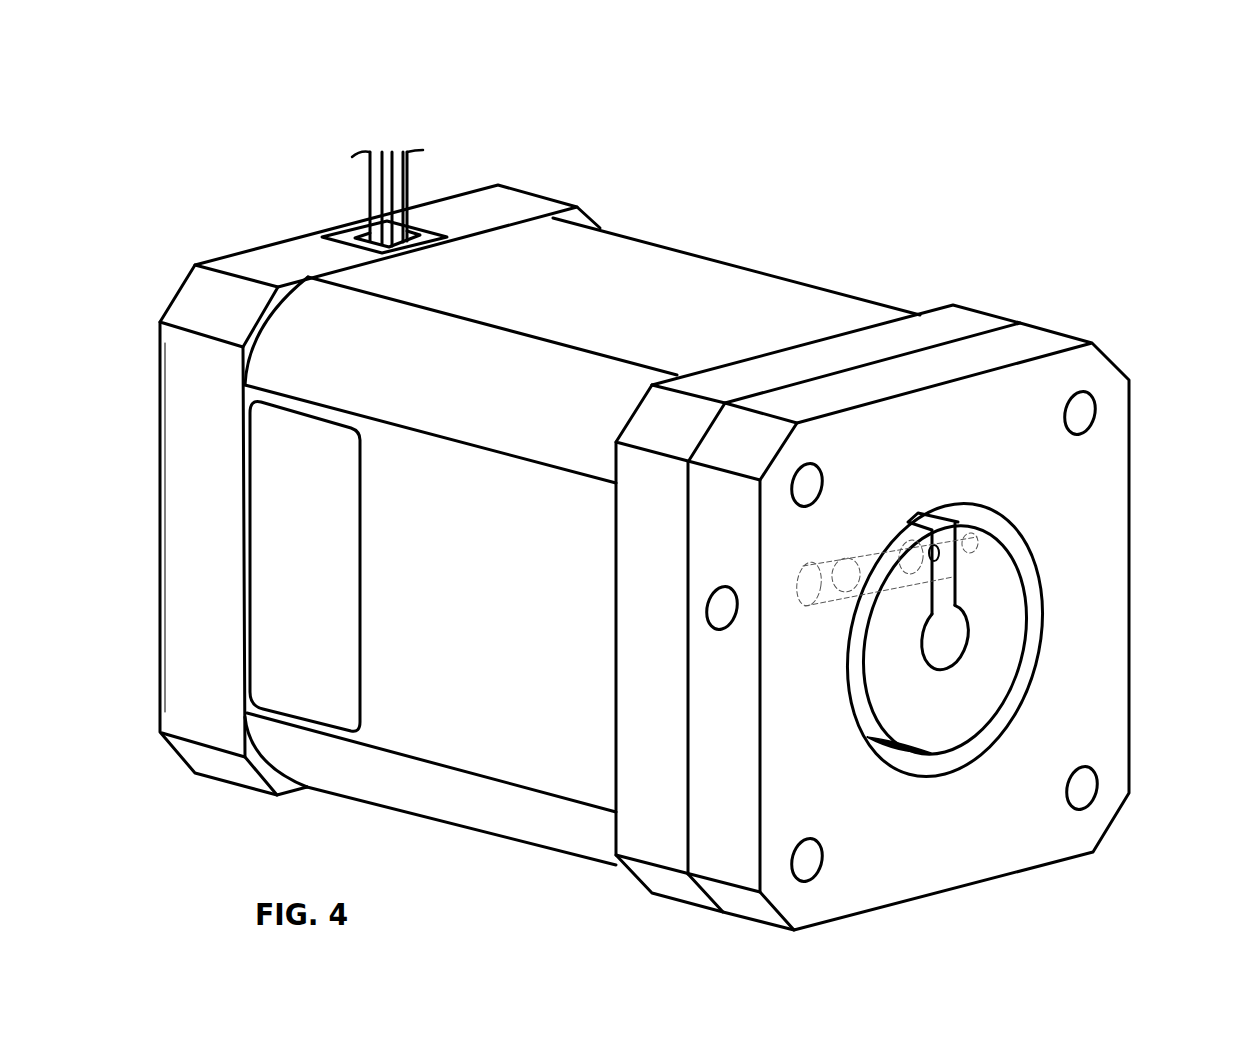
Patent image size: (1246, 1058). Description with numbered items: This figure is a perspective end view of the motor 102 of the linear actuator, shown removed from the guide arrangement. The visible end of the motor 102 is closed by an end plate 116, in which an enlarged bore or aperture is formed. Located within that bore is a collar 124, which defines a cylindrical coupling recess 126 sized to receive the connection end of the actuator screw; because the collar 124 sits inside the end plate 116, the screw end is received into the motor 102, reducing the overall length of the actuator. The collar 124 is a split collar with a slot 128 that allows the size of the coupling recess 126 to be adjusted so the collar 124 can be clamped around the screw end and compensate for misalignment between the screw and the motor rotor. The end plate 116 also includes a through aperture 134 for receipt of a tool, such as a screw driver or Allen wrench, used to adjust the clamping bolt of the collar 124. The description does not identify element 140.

The motor 102 is at (738, 285).
The end plate 116 is at (1043, 342).
The collar 124 is at (1008, 603).
The coupling recess 126 is at (980, 638).
The slot 128 is at (968, 572).
The through aperture 134 is at (722, 608).
The boss ring 140 is at (936, 748).